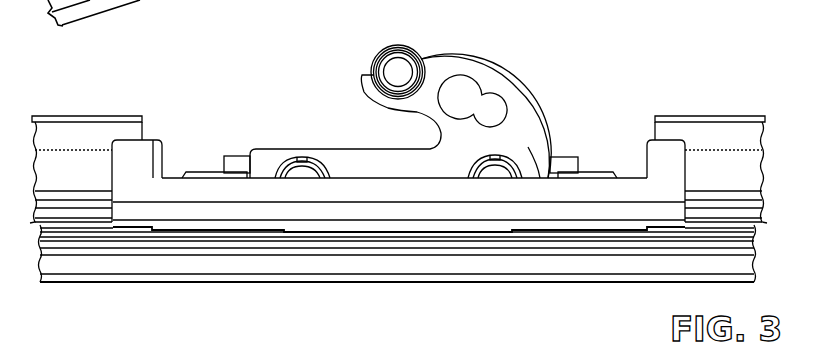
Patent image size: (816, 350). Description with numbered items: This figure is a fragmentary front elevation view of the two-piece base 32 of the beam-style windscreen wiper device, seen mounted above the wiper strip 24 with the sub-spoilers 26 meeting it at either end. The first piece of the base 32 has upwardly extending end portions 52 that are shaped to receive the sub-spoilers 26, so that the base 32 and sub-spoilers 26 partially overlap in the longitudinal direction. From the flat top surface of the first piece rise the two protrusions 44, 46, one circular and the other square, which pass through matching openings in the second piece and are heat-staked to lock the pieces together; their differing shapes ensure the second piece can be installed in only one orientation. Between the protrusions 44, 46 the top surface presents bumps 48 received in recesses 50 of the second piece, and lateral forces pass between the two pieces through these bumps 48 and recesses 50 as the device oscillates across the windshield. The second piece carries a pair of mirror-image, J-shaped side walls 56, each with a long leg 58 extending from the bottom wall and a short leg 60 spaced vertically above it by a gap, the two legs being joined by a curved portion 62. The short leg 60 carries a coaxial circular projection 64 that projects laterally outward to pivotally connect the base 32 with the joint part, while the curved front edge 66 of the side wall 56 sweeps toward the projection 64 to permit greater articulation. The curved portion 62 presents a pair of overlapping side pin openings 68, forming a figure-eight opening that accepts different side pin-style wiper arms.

The wiper strip 24 is at (104, 0).
The sub-spoiler 26 is at (75, 133).
The base 32 is at (544, 89).
The protrusion 44 is at (228, 155).
The protrusion 46 is at (566, 155).
The bump 48 is at (490, 178).
The recess 50 is at (297, 157).
The end portion 52 is at (128, 153).
The side wall 56 is at (540, 178).
The long leg 58 is at (364, 165).
The short leg 60 is at (435, 77).
The curved portion 62 is at (533, 133).
The circular projection 64 is at (399, 45).
The front edge 66 is at (492, 67).
The side pin opening 68 is at (460, 88).